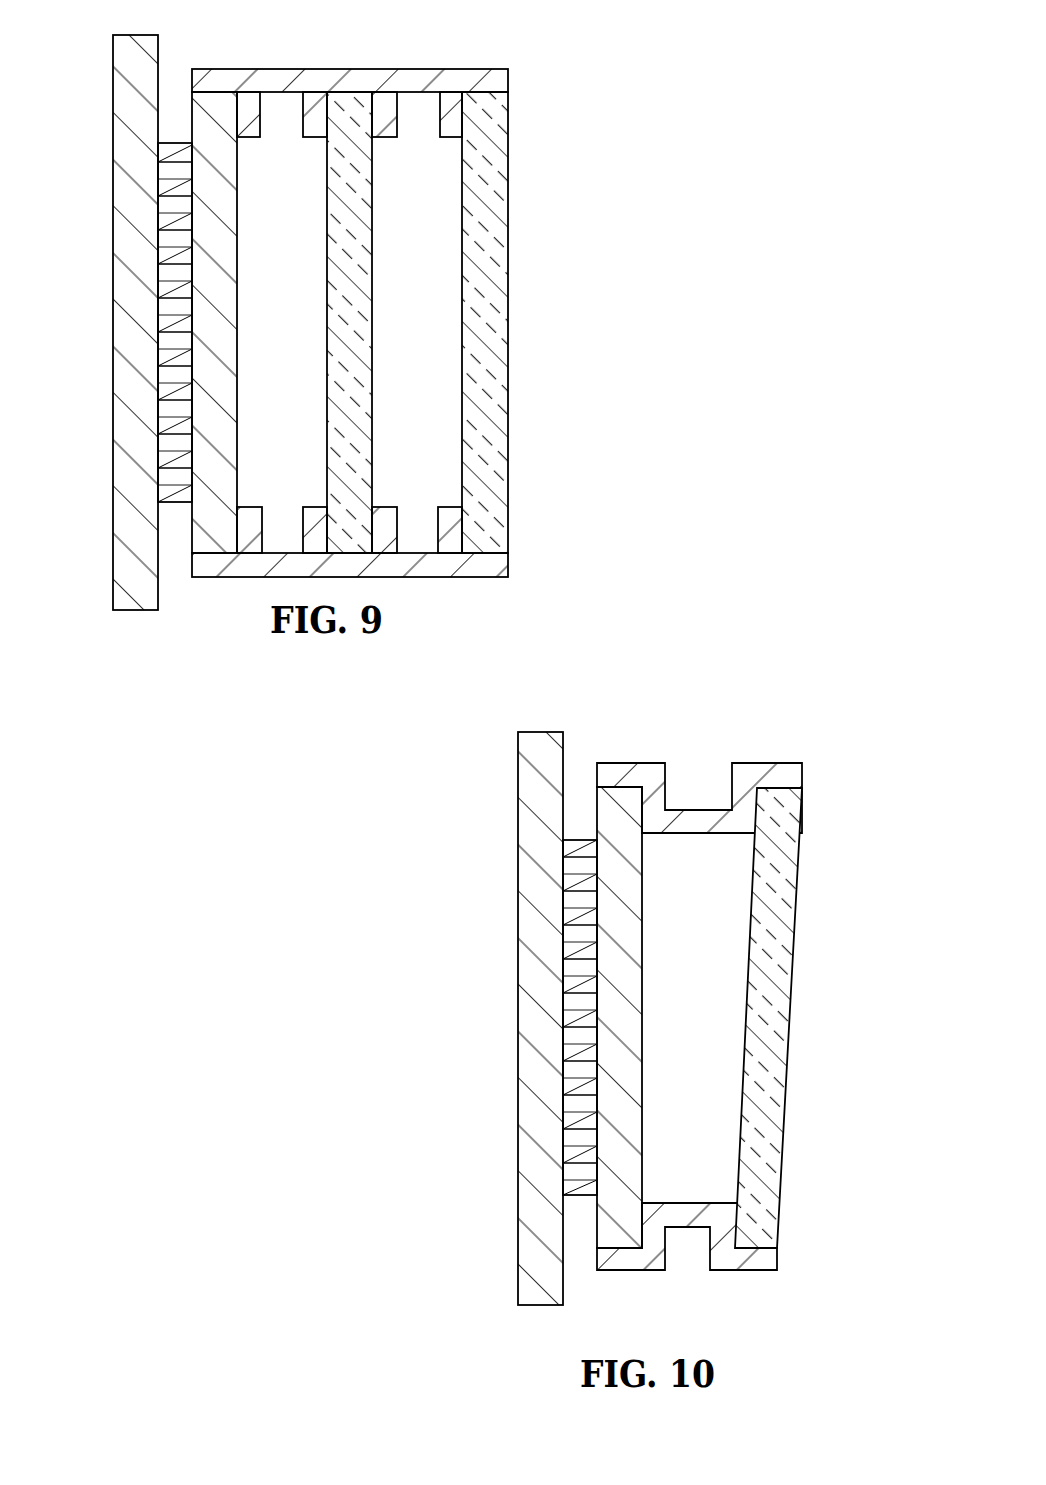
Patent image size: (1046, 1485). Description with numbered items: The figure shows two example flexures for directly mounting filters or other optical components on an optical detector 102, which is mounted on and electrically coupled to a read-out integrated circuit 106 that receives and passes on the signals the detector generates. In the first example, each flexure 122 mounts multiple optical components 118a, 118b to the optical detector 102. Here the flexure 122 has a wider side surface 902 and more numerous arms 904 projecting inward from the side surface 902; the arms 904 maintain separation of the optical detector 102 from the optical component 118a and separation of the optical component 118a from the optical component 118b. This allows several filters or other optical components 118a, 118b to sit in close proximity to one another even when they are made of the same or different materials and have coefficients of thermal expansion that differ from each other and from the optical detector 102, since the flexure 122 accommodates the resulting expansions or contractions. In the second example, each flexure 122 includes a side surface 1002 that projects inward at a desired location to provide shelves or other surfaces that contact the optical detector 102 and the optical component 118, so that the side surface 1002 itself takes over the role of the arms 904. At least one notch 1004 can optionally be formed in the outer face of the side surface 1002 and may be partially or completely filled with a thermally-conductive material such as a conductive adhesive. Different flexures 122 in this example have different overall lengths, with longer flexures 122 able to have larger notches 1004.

In FIG. 9, the optical detector 102 is at (230, 338).
In FIG. 10, the optical detector 102 is at (636, 1033).
In FIG. 9, the read-out integrated circuit 106 is at (122, 343).
In FIG. 10, the read-out integrated circuit 106 is at (525, 983).
In FIG. 10, the optical component 118 is at (783, 1025).
In FIG. 9, the first optical component 118a is at (340, 95).
In FIG. 9, the second optical component 118b is at (498, 333).
In FIG. 9, the flexure 122 is at (258, 78).
In FIG. 10, the flexure 122 is at (633, 775).
In FIG. 9, the side surface 902 is at (404, 305).
In FIG. 9, the arm 904 is at (261, 482).
In FIG. 10, the side surface 1002 is at (742, 1023).
In FIG. 10, the notch 1004 is at (693, 1280).